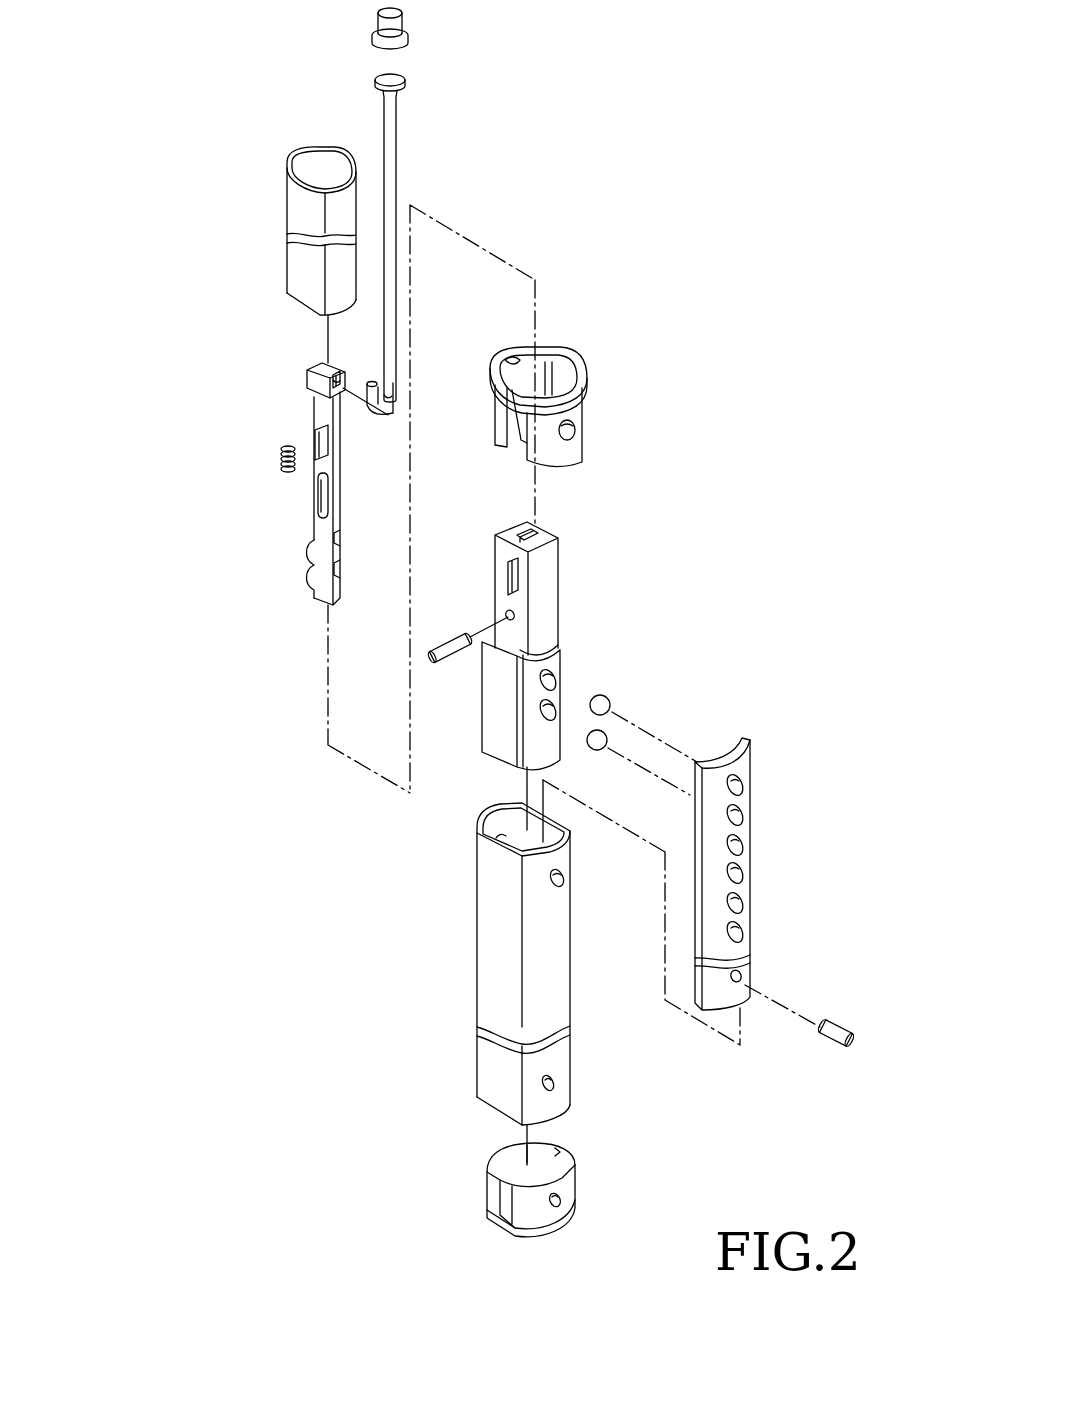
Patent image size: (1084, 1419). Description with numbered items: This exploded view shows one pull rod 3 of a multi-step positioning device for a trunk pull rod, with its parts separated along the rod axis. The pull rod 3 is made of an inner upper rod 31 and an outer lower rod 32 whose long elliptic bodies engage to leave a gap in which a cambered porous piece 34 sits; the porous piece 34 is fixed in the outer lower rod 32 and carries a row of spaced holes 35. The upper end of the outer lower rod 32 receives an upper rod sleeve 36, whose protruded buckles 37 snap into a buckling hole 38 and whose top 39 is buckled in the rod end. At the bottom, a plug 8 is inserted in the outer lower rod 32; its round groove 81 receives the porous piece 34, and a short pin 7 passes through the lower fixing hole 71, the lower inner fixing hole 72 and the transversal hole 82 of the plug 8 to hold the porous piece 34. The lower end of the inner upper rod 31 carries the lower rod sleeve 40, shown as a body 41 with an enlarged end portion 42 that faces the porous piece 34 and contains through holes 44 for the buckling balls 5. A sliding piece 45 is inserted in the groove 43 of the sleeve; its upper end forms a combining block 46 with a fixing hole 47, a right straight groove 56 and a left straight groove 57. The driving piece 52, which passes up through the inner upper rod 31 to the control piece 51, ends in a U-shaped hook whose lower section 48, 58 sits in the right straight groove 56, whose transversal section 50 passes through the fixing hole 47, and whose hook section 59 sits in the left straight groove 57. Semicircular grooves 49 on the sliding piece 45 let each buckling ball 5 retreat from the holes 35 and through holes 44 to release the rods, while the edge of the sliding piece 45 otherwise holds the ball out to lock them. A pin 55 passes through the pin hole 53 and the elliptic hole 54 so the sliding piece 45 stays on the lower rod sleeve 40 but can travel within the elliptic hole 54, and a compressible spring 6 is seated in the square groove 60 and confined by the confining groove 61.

The pull rod 3 is at (382, 636).
The buckling ball 5 is at (611, 705).
The compressible spring 6 is at (280, 463).
The short pin 7 is at (850, 1035).
The plug 8 is at (580, 1196).
The inner upper rod 31 is at (300, 258).
The outer lower rod 32 is at (462, 925).
The porous piece 34 is at (773, 874).
The holes 35 is at (740, 816).
The upper rod sleeve 36 is at (568, 374).
The protruded buckle 37 is at (577, 434).
The buckling hole 38 is at (564, 878).
The top of the upper rod sleeve 39 is at (586, 392).
The lower rod sleeve 40 is at (589, 647).
The locking block 41 is at (536, 580).
The enlarged end portion 42 is at (556, 715).
The groove 43 is at (540, 540).
The through hole 44 is at (548, 713).
The sliding piece 45 is at (314, 460).
The combining block 46 is at (310, 385).
The fixing hole 47 is at (340, 392).
The lower section 48 is at (315, 585).
The semicircular groove 49 is at (345, 572).
The transversal section 50 is at (408, 373).
The control piece 51 is at (401, 22).
The driving piece 52 is at (398, 175).
The pin hole 53 is at (505, 612).
The elliptic hole 54 is at (322, 497).
The pin 55 is at (455, 665).
The right straight groove 56 is at (339, 382).
The left straight groove 57 is at (318, 366).
The lower section 58 is at (390, 397).
The hook section 59 is at (378, 388).
The square groove 60 is at (320, 440).
The confining groove 61 is at (512, 570).
The lower fixing hole 71 is at (556, 1085).
The lower inner fixing hole 72 is at (742, 977).
The round groove 81 is at (570, 1215).
The transversal hole 82 is at (561, 1201).